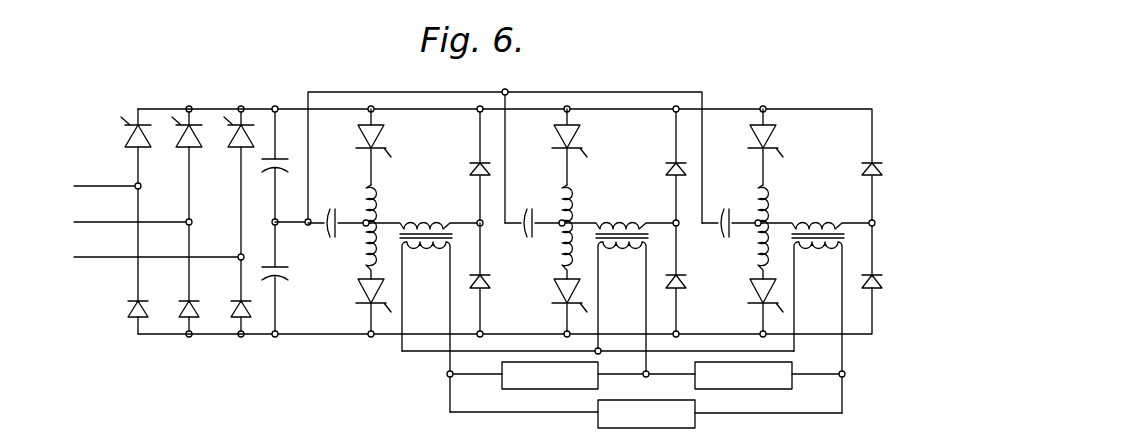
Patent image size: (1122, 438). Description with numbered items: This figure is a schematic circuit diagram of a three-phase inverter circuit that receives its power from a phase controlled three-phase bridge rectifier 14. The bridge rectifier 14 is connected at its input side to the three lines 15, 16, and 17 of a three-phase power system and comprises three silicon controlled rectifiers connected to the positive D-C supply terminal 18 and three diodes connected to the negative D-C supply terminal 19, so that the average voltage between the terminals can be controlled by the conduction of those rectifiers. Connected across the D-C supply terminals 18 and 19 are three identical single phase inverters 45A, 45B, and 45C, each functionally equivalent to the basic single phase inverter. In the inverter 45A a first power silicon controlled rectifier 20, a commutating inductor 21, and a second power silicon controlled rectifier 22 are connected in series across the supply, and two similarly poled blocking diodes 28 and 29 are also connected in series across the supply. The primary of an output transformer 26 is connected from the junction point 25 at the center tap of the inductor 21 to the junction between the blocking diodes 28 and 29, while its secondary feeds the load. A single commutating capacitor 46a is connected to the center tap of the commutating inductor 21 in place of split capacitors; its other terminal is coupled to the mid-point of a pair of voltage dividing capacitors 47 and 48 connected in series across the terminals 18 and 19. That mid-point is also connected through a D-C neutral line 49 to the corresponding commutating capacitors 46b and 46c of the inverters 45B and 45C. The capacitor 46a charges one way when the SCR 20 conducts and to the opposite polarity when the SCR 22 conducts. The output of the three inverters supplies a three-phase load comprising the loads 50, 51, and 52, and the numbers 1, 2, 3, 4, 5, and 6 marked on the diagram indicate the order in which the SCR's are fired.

The three-phase bridge rectifier 14 is at (227, 212).
The line 15 is at (118, 186).
The line 16 is at (118, 222).
The line 17 is at (118, 257).
The positive D-C supply terminal 18 is at (243, 107).
The negative D-C supply terminal 19 is at (256, 337).
The voltage dividing capacitor 47 is at (278, 161).
The voltage dividing capacitor 48 is at (281, 268).
The D-C neutral line 49 is at (338, 91).
The single phase inverter 45A is at (432, 103).
The single phase inverter 45B is at (639, 103).
The single phase inverter 45C is at (826, 103).
The firing order number 1 is at (373, 107).
The firing order number 3 is at (565, 108).
The firing order number 5 is at (763, 106).
The firing order number 2 is at (760, 332).
The firing order number 4 is at (370, 337).
The firing order number 6 is at (564, 332).
The first power silicon controlled rectifier 20 is at (359, 129).
The commutating inductor 21 is at (361, 229).
The second power silicon controlled rectifier 22 is at (358, 292).
The junction point 25 is at (482, 227).
The output transformer 26 is at (455, 233).
The blocking diode 28 is at (470, 170).
The blocking diode 29 is at (483, 289).
The commutating capacitor 46a is at (325, 211).
The commutating capacitor 46b is at (522, 212).
The commutating capacitor 46c is at (719, 212).
The load 50 is at (500, 383).
The load 51 is at (793, 366).
The load 52 is at (597, 423).